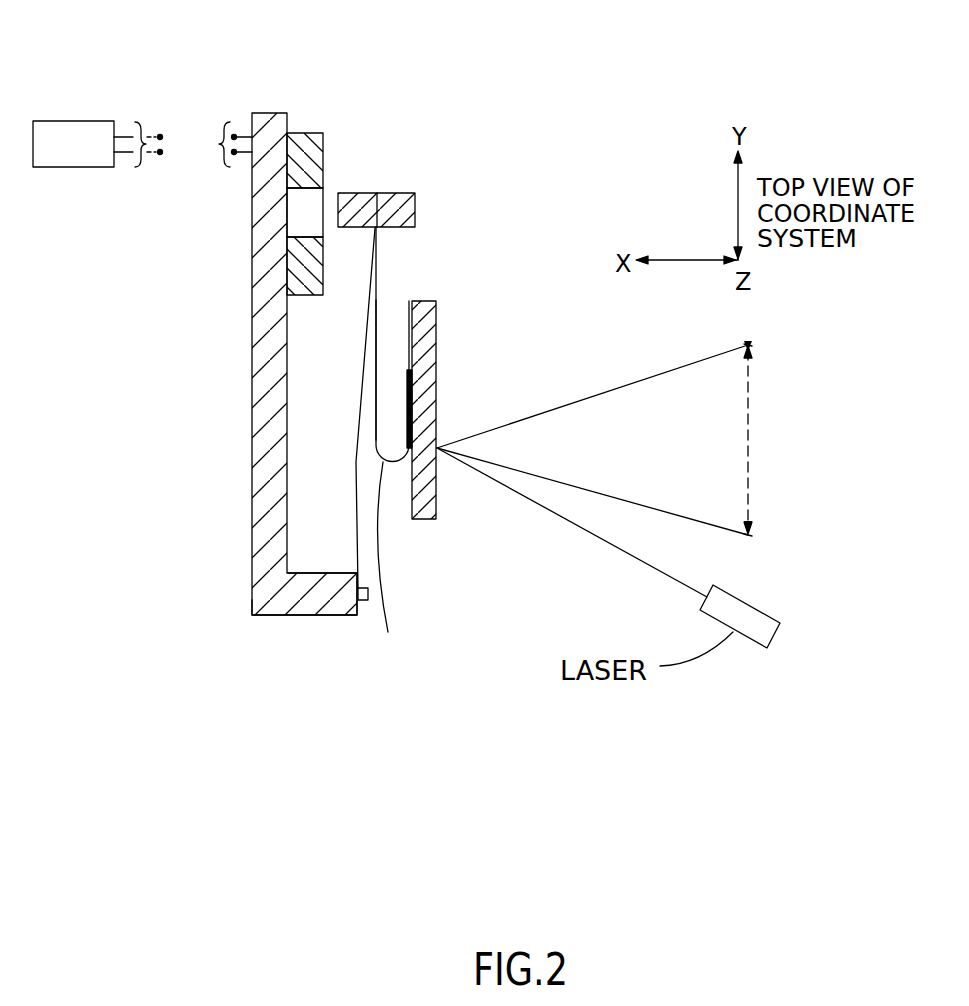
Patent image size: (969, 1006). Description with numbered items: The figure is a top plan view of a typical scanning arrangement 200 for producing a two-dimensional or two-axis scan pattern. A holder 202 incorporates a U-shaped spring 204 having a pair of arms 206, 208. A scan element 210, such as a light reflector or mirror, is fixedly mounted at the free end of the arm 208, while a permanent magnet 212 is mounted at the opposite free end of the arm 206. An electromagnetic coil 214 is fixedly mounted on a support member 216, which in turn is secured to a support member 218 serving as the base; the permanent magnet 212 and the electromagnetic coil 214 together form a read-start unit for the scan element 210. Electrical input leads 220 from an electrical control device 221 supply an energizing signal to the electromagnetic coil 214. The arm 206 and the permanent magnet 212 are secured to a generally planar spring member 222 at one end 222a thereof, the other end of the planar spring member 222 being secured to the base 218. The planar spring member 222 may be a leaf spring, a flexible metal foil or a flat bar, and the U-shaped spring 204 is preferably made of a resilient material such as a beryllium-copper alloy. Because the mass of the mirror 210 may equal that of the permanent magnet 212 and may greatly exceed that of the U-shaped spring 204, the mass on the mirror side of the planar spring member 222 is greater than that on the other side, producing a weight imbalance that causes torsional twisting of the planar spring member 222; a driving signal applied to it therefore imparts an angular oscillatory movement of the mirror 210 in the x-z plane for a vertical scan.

The scanning arrangement 200 is at (242, 437).
The holder 202 is at (378, 282).
The U-shaped spring 204 is at (388, 561).
The arm 206 is at (376, 375).
The arm 208 is at (401, 462).
The scan element 210 is at (436, 322).
The permanent magnet 212 is at (415, 195).
The electromagnetic coil 214 is at (313, 133).
The support member 216 is at (253, 375).
The support member 218 is at (303, 615).
The electrical input leads 220 is at (183, 144).
The electrical control device 221 is at (95, 120).
The planar spring member 222 is at (361, 403).
The one end of planar spring member 222a is at (377, 191).